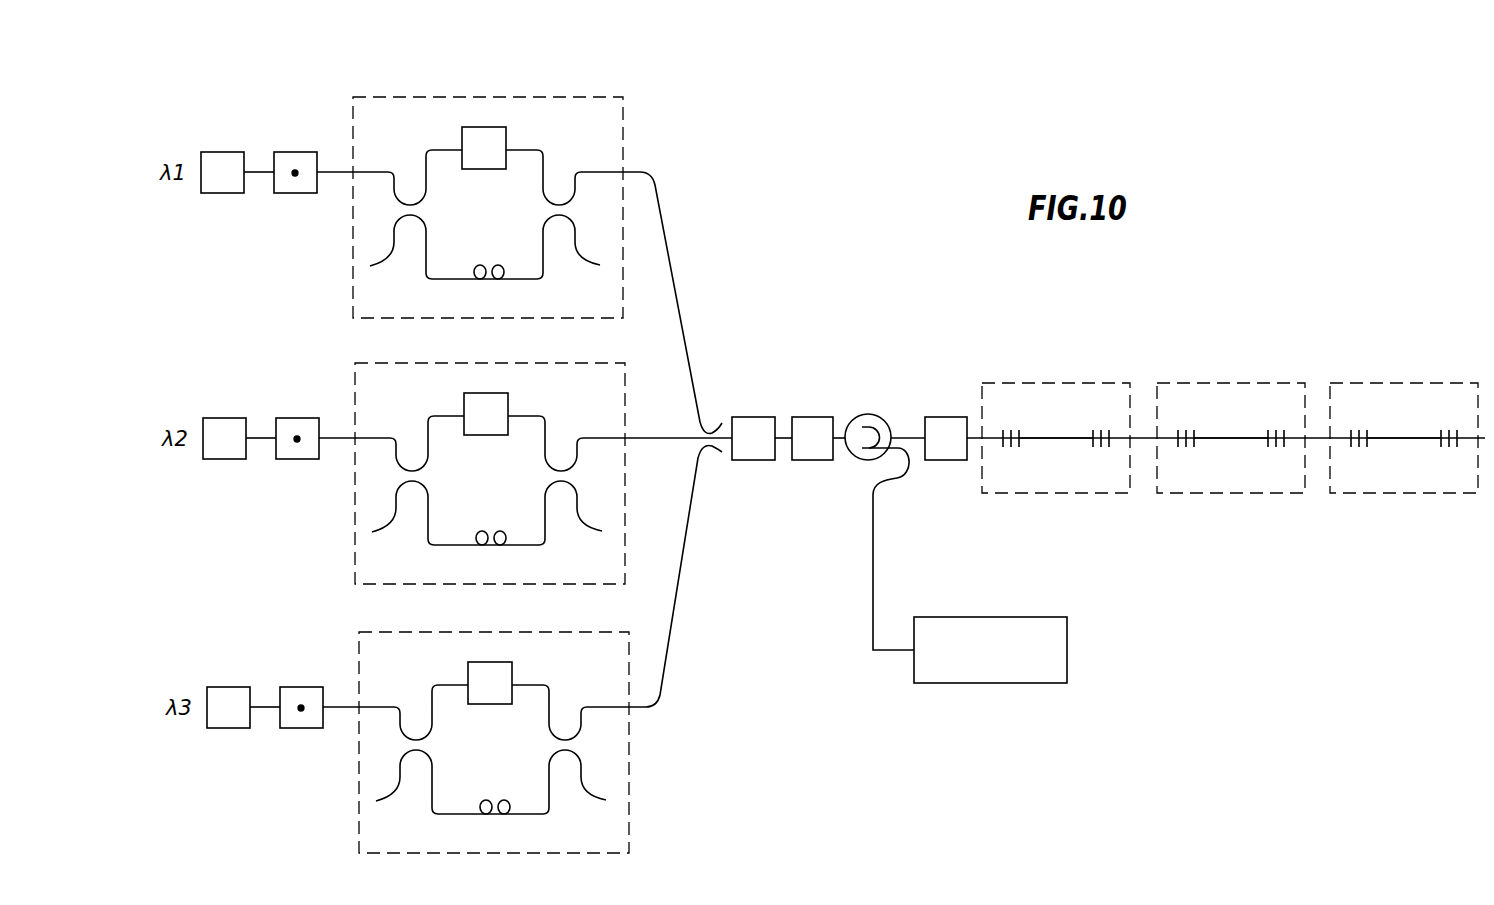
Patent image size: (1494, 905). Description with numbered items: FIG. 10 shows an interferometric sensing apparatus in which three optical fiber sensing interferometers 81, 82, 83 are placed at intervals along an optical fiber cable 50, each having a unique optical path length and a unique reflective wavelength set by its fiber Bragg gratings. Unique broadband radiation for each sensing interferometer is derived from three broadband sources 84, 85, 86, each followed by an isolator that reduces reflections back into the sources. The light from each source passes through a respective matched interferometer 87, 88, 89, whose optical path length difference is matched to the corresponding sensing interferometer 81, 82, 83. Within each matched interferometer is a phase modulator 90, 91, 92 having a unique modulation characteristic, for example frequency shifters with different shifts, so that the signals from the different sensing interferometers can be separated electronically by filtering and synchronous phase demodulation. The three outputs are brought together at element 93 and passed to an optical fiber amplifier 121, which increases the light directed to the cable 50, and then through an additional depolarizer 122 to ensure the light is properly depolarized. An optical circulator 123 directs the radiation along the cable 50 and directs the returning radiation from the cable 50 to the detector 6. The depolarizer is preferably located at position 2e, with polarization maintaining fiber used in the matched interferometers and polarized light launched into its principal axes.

The broadband source 84 is at (224, 152).
The broadband source 85 is at (241, 418).
The broadband source 86 is at (245, 687).
The matched interferometer 87 is at (623, 138).
The matched interferometer 88 is at (492, 473).
The matched interferometer 89 is at (507, 742).
The phase modulator 90 is at (506, 136).
The phase modulator 91 is at (511, 401).
The phase modulator 92 is at (515, 670).
The wavelength combiner / coupler 93 is at (708, 427).
The optical fiber amplifier 121 is at (752, 417).
The additional depolarizer 122 is at (812, 417).
The optical circulator 123 is at (872, 415).
The depolarizer 2e is at (947, 417).
The detector 6 is at (1007, 683).
The optical fiber cable 50 is at (1143, 438).
The optical fiber sensing interferometer 81 is at (1052, 376).
The optical fiber sensing interferometer 82 is at (1231, 437).
The optical fiber sensing interferometer 83 is at (1404, 437).